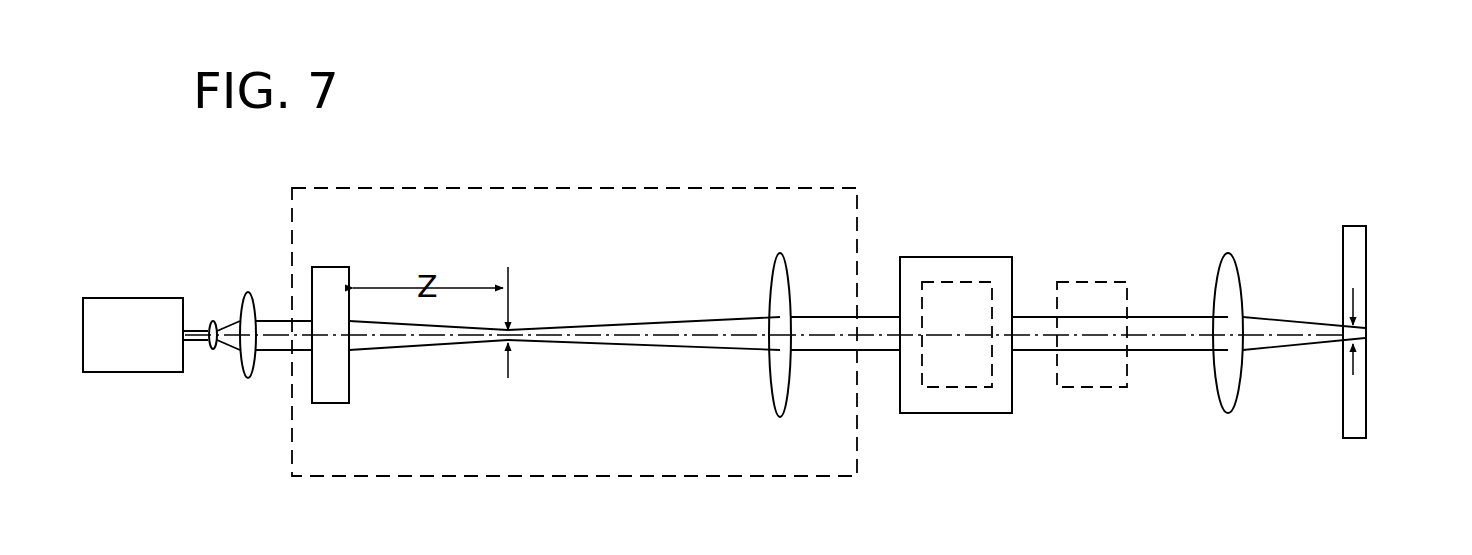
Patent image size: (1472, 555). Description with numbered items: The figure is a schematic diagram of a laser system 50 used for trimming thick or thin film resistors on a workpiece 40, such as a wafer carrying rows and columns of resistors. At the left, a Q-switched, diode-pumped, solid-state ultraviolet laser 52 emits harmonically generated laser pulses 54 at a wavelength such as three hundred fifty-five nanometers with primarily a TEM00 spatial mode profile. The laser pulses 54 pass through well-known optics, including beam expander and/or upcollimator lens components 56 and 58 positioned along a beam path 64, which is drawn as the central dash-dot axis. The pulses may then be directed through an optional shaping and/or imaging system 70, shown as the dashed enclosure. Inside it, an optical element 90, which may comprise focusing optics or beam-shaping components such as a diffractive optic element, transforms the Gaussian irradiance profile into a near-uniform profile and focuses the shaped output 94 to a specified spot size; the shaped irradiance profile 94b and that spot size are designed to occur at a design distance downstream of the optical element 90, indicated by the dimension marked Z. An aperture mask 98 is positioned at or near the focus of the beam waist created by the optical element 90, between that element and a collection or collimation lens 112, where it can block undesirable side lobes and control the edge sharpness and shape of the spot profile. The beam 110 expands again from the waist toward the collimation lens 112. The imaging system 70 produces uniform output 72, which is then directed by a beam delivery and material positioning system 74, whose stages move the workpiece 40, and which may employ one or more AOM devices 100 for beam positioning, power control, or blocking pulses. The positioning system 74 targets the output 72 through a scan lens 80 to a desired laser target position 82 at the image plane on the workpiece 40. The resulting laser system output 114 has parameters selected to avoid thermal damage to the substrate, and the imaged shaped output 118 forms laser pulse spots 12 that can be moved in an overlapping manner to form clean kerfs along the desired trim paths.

The laser pulse spots 12 is at (1350, 333).
The workpiece 40 is at (1360, 226).
The laser system 50 is at (796, 109).
The laser 52 is at (135, 298).
The laser pulses 54 is at (197, 329).
The beam expander and/or upcollimator lens component 56 is at (213, 321).
The beam expander and/or upcollimator lens component 58 is at (250, 292).
The beam path 64 is at (397, 337).
The shaping and/or imaging system 70 is at (467, 187).
The uniform pulses or output 72 is at (875, 317).
The beam positioning system 74 is at (935, 257).
The scan lens 80 is at (1228, 253).
The laser target position 82 is at (1342, 334).
The optical element 90 is at (328, 267).
The shaped output 94 is at (377, 351).
The shaped irradiance profile 94b is at (503, 343).
The aperture mask 98 is at (512, 293).
The AOM device 100 is at (977, 282).
The diverging beam 110 is at (730, 318).
The collection or collimation lens 112 is at (780, 253).
The laser system output 114 is at (1272, 317).
The imaged shaped output 118 is at (1340, 338).